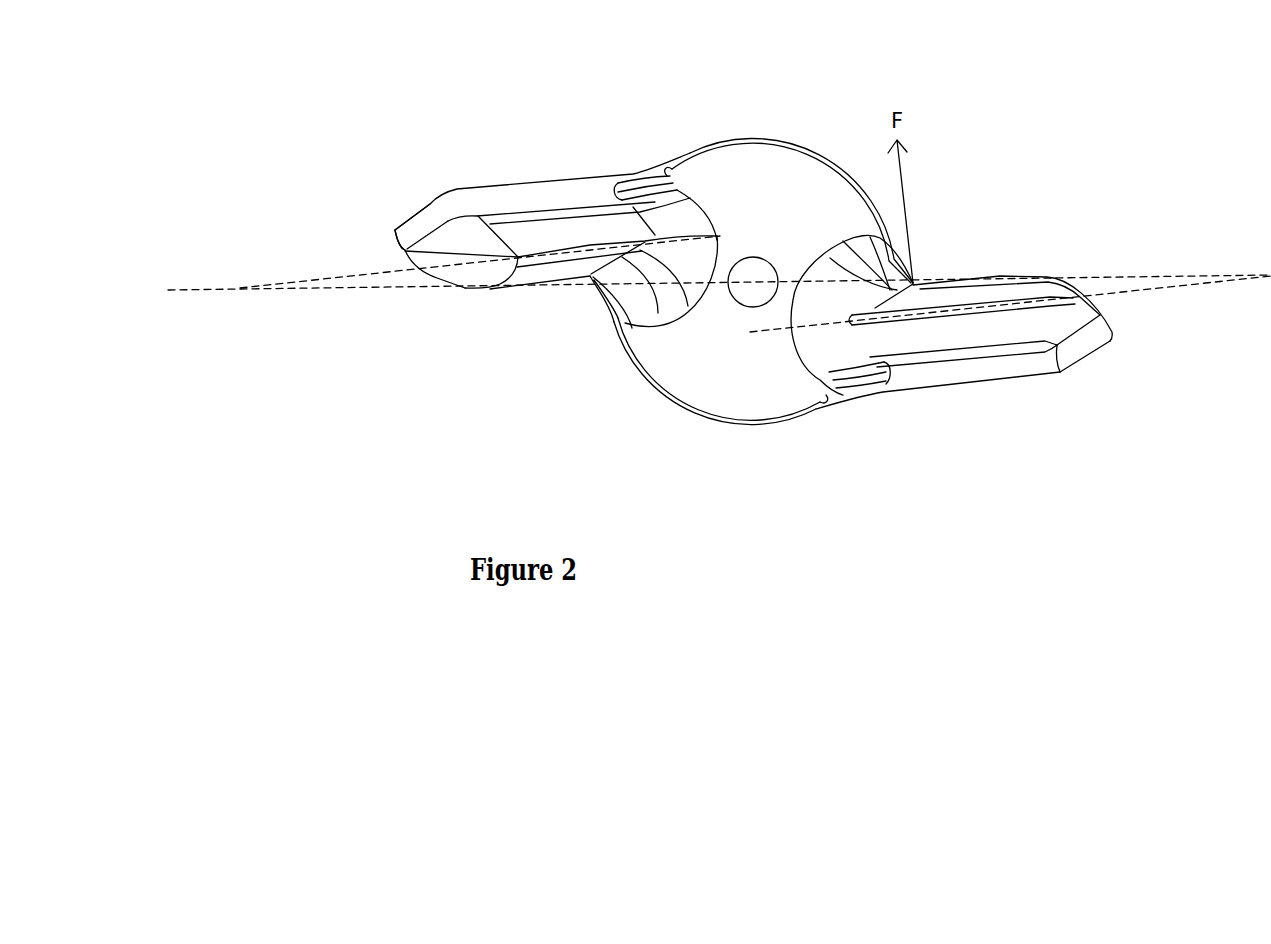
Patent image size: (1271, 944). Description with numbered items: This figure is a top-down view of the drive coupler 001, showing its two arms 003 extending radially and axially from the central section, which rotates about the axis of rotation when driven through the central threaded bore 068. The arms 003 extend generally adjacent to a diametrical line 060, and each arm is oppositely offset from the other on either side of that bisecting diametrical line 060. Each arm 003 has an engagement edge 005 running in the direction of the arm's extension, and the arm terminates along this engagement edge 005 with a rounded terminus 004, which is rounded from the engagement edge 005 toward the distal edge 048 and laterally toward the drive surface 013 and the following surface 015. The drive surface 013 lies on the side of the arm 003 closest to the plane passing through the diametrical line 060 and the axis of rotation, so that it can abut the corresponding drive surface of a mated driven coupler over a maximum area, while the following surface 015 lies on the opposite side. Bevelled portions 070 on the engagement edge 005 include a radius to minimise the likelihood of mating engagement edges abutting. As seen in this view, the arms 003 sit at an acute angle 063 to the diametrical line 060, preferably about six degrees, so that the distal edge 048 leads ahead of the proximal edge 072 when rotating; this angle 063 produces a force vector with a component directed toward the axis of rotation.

The coupler 001 is at (793, 457).
The arms 003 is at (515, 228).
The rounded terminus 004 is at (453, 260).
The engagement edge 005 is at (567, 268).
The drive surface 013 is at (627, 175).
The following surface 015 is at (513, 197).
The distal edge 048 is at (400, 242).
The diametrical line 060 is at (320, 288).
The acute angle 063 is at (368, 277).
The threaded bore 068 is at (740, 293).
The bevelled portions 070 is at (597, 253).
The proximal edge 072 is at (887, 297).